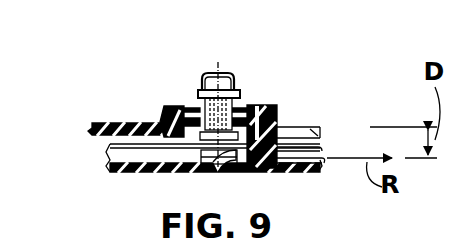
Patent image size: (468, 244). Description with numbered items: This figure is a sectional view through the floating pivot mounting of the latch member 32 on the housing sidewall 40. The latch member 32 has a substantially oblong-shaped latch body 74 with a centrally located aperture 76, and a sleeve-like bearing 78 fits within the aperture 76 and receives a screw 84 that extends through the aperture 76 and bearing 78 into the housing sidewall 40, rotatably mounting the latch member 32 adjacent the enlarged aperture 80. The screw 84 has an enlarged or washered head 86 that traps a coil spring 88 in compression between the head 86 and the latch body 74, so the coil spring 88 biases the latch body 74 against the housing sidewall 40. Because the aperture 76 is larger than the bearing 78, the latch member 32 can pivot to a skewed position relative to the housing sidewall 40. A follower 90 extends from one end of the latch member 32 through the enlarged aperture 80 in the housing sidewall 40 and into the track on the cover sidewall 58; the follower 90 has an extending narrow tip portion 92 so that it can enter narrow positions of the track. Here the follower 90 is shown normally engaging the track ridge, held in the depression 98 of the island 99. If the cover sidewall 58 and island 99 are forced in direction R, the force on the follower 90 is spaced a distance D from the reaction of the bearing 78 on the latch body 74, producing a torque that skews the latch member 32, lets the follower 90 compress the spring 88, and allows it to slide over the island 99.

The latch member 32 is at (160, 103).
The housing sidewall 40 is at (104, 120).
The cover sidewall 58 is at (300, 176).
The latch body 74 is at (184, 100).
The aperture 76 is at (283, 118).
The bearing 78 is at (245, 95).
The enlarged aperture 80 is at (320, 112).
The screw 84 is at (230, 77).
The head 86 is at (204, 96).
The coil spring 88 is at (255, 112).
The follower 90 is at (320, 137).
The tip portion 92 is at (320, 153).
The depression 98 is at (250, 166).
The island 99 is at (220, 158).